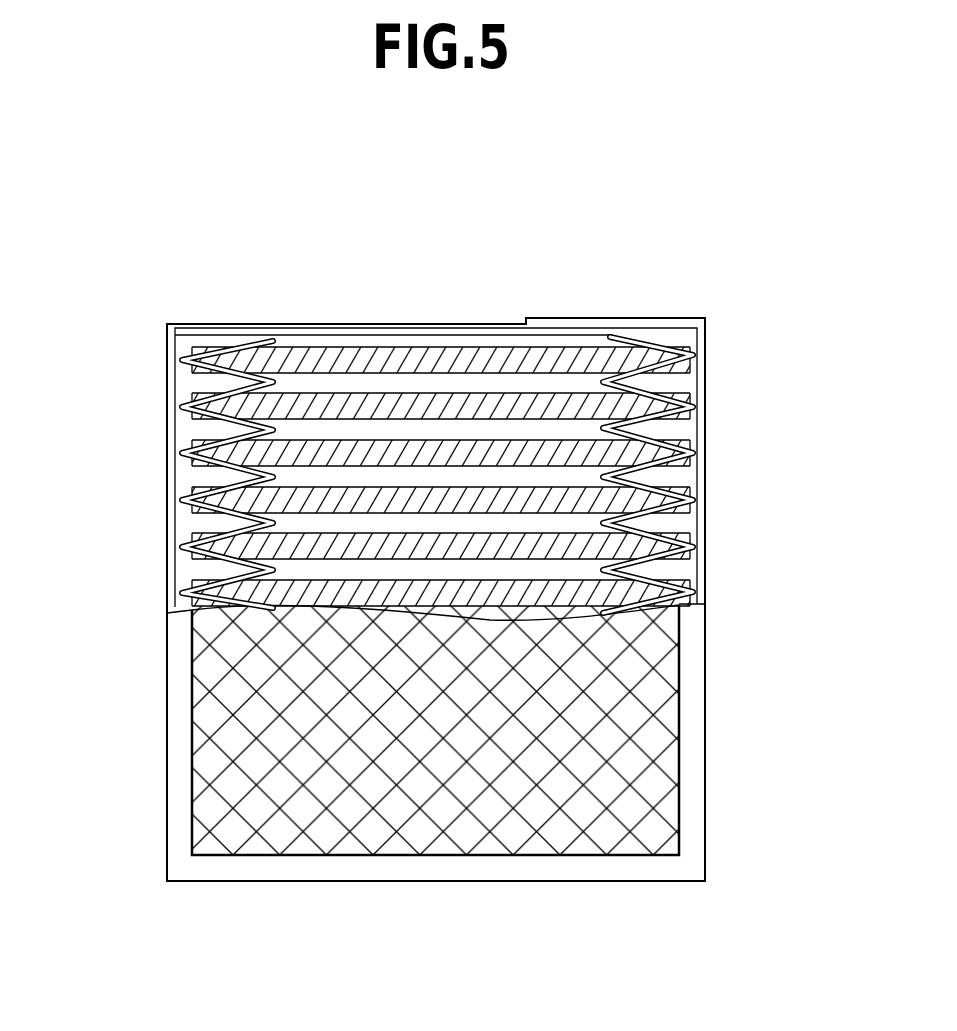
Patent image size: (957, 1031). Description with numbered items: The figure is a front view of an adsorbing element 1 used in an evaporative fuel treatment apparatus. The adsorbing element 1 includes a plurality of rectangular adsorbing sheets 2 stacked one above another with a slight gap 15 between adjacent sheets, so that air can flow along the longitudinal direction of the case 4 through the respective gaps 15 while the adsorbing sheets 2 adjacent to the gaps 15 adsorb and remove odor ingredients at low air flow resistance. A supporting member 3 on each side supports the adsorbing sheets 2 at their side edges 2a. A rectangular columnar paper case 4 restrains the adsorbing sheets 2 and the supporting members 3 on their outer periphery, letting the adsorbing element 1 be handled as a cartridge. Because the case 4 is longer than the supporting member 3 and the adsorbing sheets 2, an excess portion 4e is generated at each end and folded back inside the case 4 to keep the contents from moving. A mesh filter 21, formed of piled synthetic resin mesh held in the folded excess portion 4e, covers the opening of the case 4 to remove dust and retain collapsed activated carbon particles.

The adsorbing element 1 is at (472, 544).
The adsorbing sheets 2 is at (508, 398).
The side edges 2a is at (237, 357).
The supporting member 3 is at (655, 380).
The case 4 is at (167, 482).
The excess portion 4e is at (180, 689).
The gap 15 is at (357, 430).
The mesh filter 21 is at (617, 753).